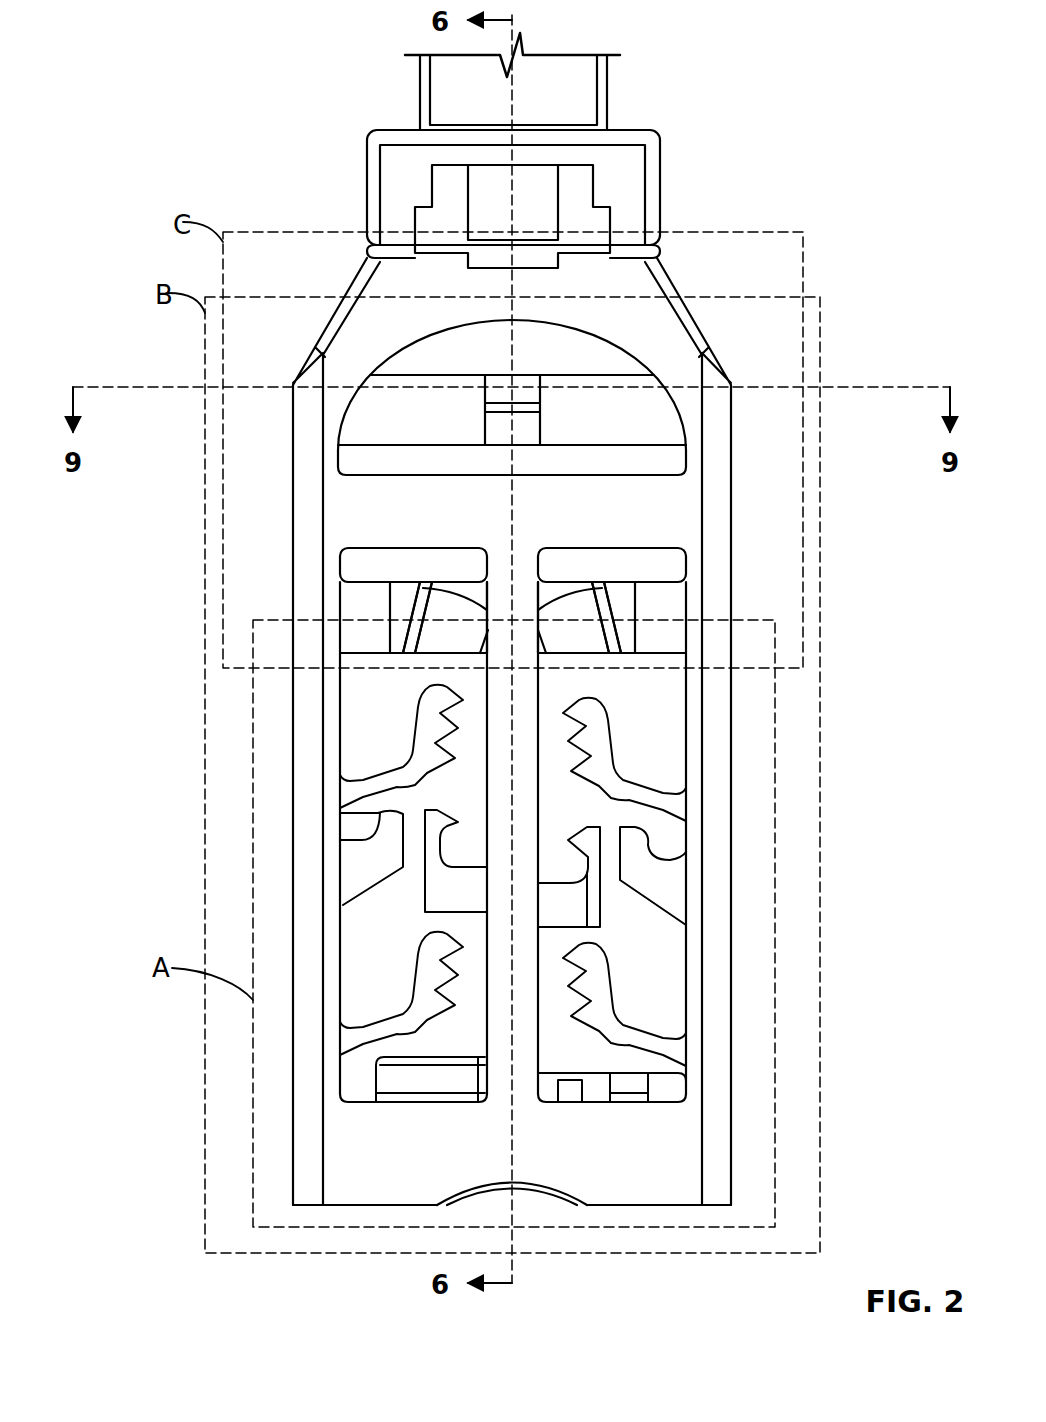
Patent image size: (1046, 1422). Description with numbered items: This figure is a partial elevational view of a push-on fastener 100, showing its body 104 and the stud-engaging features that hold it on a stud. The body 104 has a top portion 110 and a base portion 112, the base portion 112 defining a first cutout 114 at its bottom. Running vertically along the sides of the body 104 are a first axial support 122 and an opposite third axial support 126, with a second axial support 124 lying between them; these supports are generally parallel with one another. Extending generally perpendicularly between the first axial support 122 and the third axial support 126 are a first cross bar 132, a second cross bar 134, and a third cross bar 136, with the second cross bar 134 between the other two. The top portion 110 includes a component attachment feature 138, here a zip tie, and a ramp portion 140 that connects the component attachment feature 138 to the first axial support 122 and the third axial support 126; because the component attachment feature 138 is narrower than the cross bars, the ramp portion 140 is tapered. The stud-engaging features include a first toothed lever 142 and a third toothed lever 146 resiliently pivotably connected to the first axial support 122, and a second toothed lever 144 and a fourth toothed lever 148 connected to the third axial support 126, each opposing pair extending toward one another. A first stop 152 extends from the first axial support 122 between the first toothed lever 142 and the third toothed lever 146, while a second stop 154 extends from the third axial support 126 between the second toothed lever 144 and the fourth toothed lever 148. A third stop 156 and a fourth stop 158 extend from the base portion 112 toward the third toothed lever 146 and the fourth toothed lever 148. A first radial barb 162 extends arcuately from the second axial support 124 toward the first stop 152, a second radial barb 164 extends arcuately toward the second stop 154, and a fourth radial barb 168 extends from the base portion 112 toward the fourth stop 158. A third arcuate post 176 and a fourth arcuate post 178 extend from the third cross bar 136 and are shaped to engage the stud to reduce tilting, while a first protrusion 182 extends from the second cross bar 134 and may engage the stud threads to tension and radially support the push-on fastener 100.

The push-on fastener 100 is at (137, 27).
The body 104 is at (517, 742).
The top portion 110 is at (358, 290).
The base portion 112 is at (360, 1170).
The first cutout 114 is at (533, 1210).
The first axial support 122 is at (310, 775).
The second axial support 124 is at (500, 610).
The third axial support 126 is at (712, 923).
The first cross bar 132 is at (628, 417).
The second cross bar 134 is at (628, 530).
The third cross bar 136 is at (658, 645).
The component attachment feature 138 is at (652, 203).
The ramp portion 140 is at (678, 310).
The first toothed lever 142 is at (425, 757).
The second toothed lever 144 is at (600, 760).
The third toothed lever 146 is at (425, 980).
The fourth toothed lever 148 is at (612, 1028).
The first stop 152 is at (390, 825).
The second stop 154 is at (637, 840).
The third stop 156 is at (427, 1083).
The fourth stop 158 is at (628, 1087).
The first radial barb 162 is at (440, 900).
The second radial barb 164 is at (593, 907).
The fourth radial barb 168 is at (570, 1092).
The third arcuate post 176 is at (403, 600).
The fourth arcuate post 178 is at (623, 610).
The first protrusion 182 is at (528, 430).